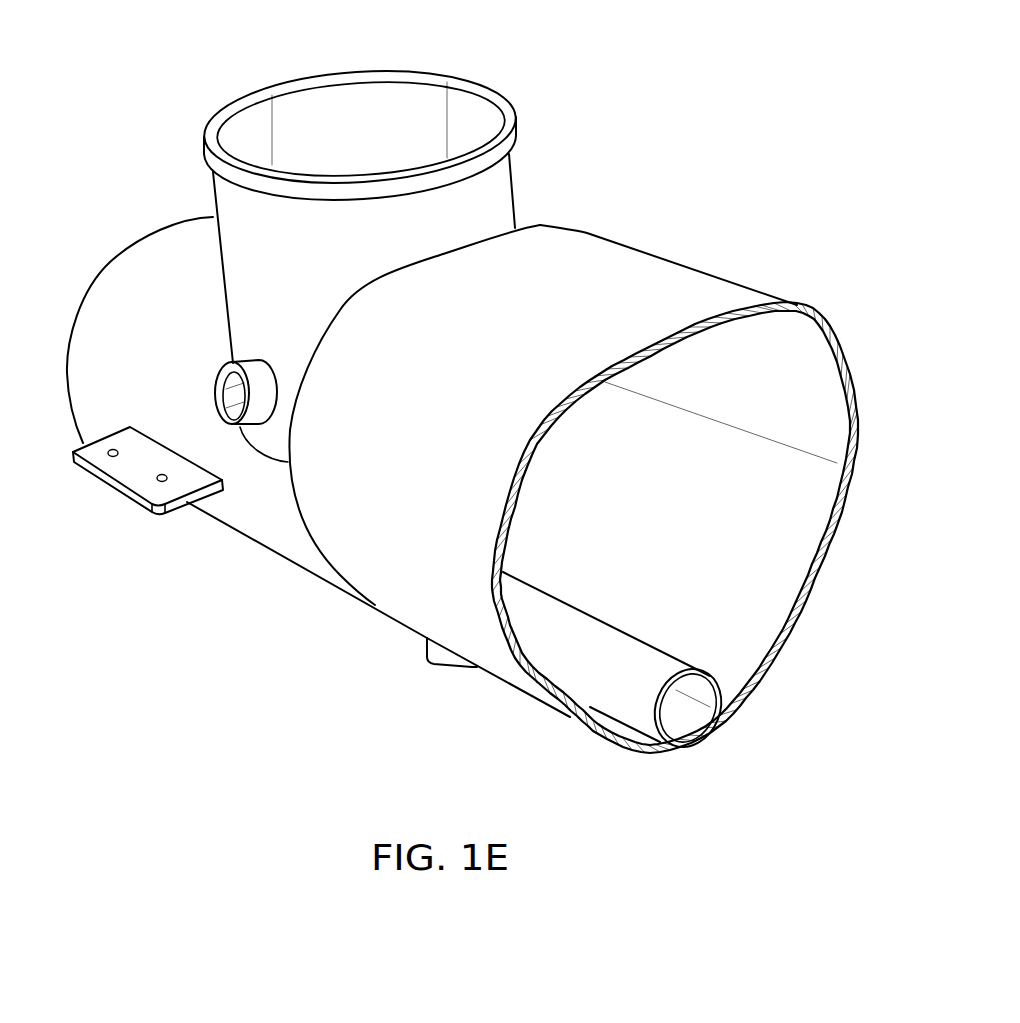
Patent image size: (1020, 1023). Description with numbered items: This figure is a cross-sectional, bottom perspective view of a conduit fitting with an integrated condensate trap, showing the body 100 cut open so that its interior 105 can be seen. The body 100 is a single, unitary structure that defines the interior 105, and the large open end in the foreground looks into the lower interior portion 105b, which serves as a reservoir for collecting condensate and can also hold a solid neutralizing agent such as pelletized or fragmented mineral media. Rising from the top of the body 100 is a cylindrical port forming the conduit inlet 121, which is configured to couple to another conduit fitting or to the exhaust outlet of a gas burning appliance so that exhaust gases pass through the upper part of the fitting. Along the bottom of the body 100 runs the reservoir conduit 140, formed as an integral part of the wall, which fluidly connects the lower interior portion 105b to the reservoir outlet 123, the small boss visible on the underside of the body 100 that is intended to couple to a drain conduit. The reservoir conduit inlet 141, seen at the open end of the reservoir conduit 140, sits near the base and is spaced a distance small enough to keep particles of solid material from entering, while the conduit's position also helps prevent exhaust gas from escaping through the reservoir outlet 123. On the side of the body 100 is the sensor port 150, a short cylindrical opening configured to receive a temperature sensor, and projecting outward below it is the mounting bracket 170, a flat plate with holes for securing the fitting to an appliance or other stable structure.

The body 100 is at (643, 253).
The interior 105 is at (774, 334).
The lower interior portion 105b is at (728, 639).
The conduit inlet 121 is at (425, 113).
The reservoir outlet 123 is at (449, 680).
The reservoir conduit 140 is at (633, 677).
The reservoir conduit inlet 141 is at (681, 712).
The sensor port 150 is at (233, 395).
The mounting bracket 170 is at (127, 500).